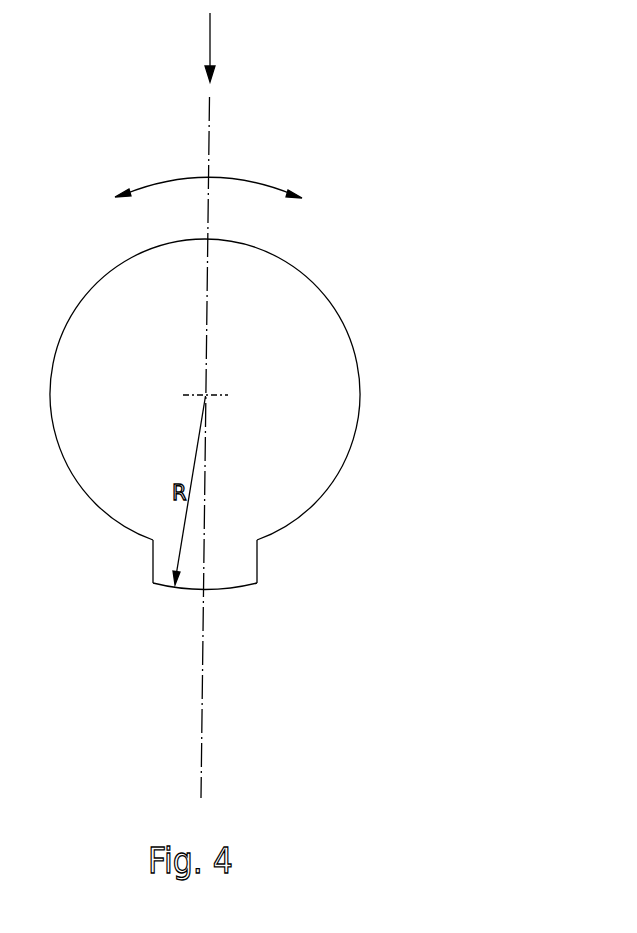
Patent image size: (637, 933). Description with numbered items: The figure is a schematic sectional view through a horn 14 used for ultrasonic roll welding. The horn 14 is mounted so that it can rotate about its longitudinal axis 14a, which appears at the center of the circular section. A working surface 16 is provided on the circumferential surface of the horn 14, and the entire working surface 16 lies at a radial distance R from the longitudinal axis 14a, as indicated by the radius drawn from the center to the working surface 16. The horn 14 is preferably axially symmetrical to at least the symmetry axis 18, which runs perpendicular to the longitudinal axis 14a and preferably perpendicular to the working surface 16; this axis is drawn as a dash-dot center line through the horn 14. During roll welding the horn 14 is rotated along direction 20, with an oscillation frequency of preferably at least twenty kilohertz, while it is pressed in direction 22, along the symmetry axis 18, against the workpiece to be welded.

The horn 14 is at (416, 308).
The longitudinal axis 14a is at (186, 404).
The working surface 16 is at (229, 594).
The symmetry axis 18 is at (203, 670).
The direction of rotation 20 is at (242, 181).
The pressing direction 22 is at (211, 42).